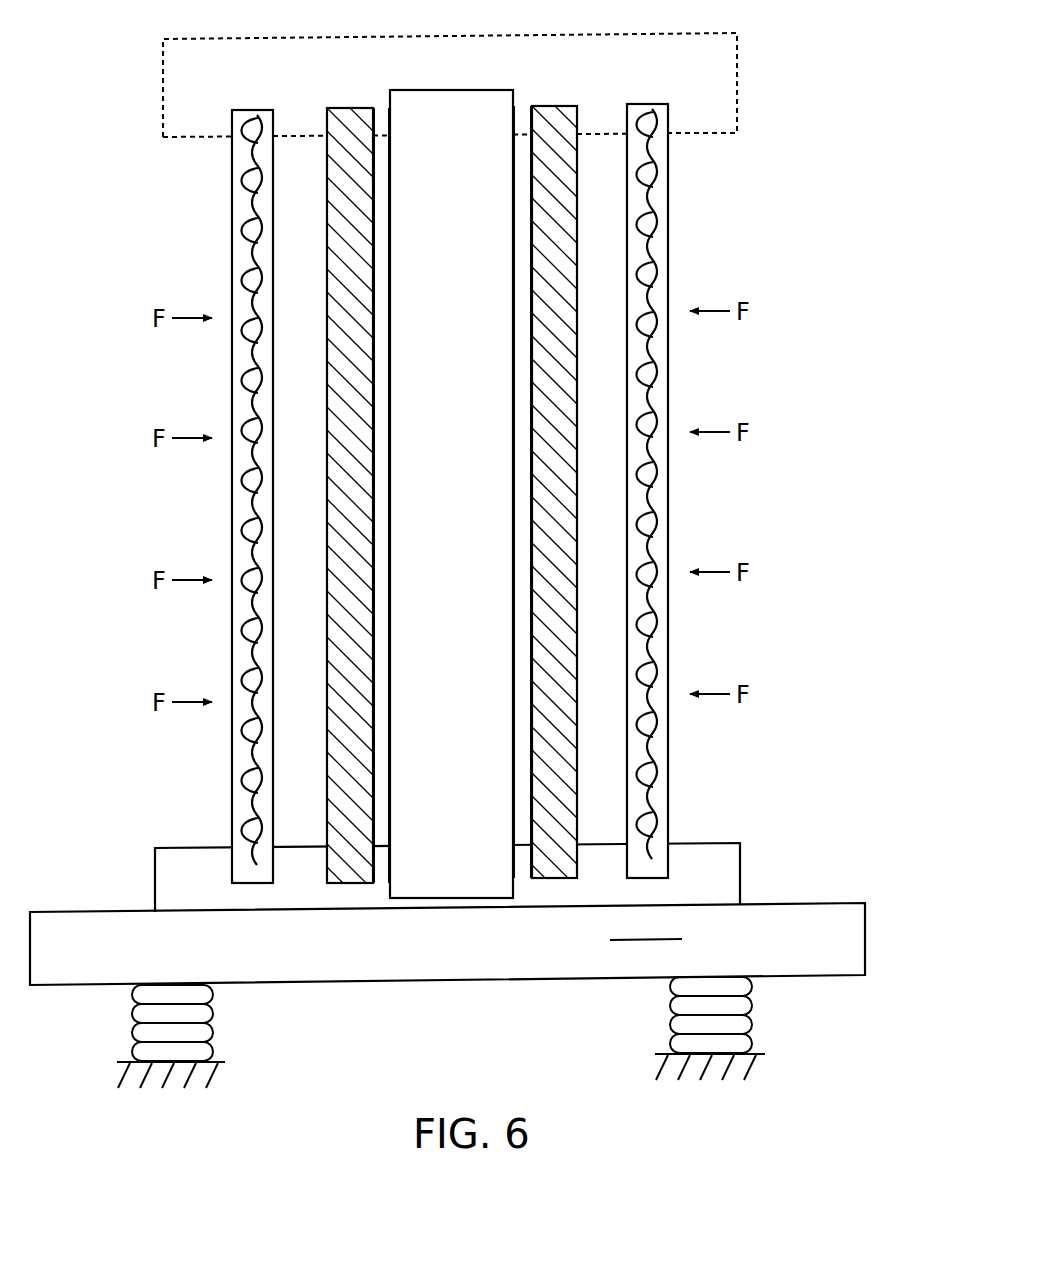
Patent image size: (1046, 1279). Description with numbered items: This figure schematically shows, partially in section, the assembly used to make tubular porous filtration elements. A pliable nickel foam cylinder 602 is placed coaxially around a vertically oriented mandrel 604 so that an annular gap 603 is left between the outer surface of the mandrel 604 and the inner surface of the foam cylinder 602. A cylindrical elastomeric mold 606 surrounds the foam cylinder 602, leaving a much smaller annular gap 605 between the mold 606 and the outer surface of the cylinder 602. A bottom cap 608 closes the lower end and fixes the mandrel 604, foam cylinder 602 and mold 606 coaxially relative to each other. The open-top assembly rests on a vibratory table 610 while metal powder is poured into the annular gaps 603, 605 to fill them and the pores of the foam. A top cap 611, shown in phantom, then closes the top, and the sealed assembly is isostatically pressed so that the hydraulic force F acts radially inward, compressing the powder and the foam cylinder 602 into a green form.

The foam cylinder 602 is at (627, 274).
The annular gap 603 is at (374, 255).
The mandrel 604 is at (470, 845).
The annular gap 605 is at (324, 592).
The elastomeric mold 606 is at (668, 379).
The bottom cap 608 is at (734, 864).
The vibratory table 610 is at (447, 944).
The top cap 611 is at (697, 36).